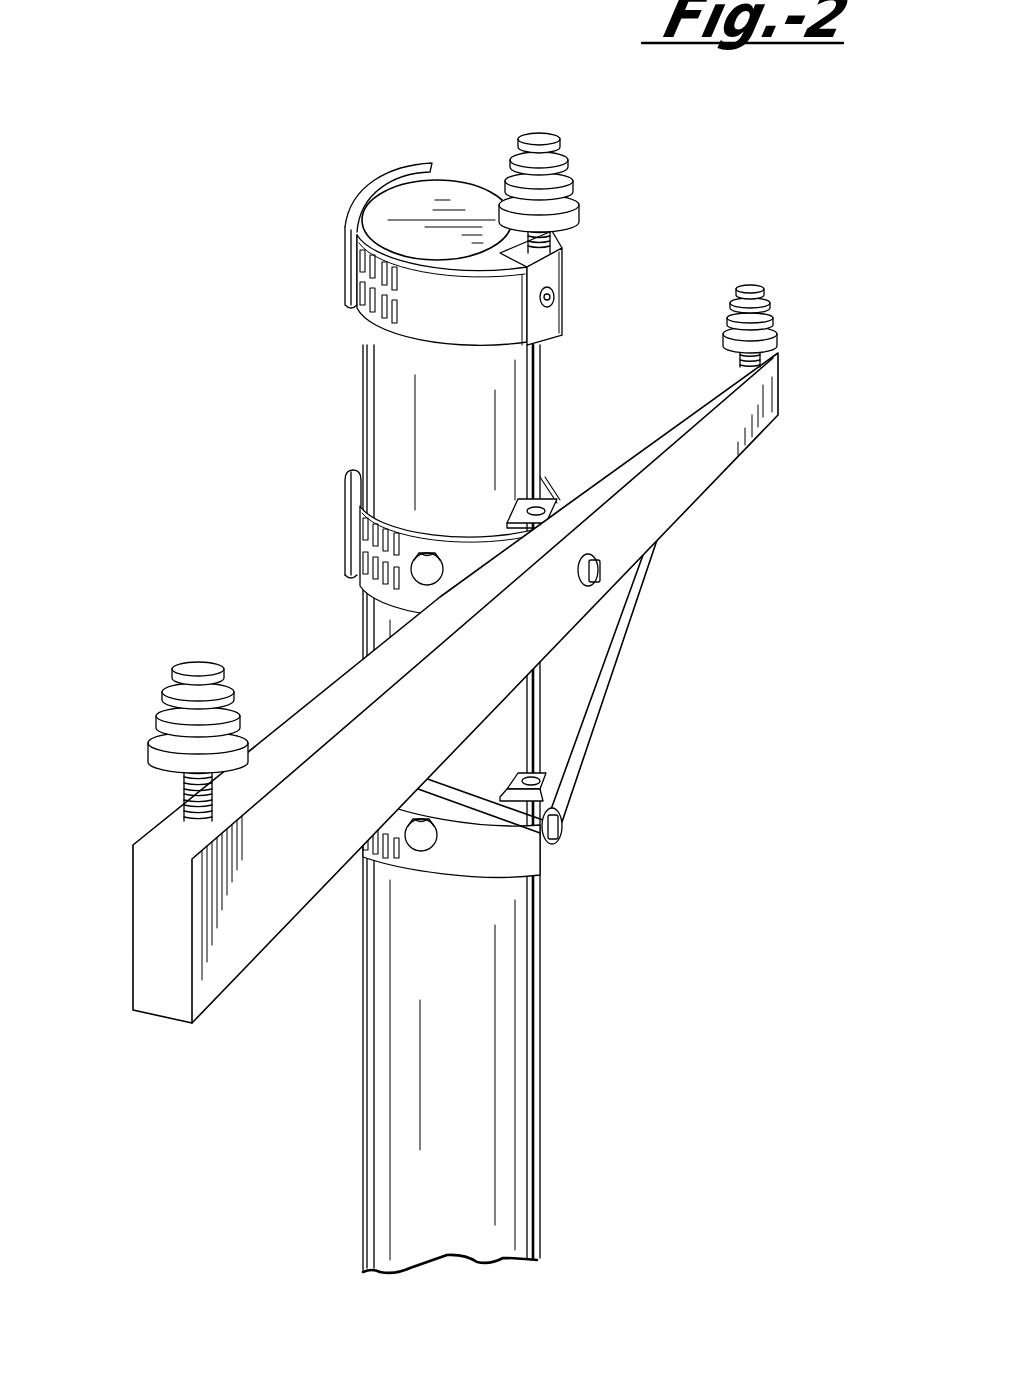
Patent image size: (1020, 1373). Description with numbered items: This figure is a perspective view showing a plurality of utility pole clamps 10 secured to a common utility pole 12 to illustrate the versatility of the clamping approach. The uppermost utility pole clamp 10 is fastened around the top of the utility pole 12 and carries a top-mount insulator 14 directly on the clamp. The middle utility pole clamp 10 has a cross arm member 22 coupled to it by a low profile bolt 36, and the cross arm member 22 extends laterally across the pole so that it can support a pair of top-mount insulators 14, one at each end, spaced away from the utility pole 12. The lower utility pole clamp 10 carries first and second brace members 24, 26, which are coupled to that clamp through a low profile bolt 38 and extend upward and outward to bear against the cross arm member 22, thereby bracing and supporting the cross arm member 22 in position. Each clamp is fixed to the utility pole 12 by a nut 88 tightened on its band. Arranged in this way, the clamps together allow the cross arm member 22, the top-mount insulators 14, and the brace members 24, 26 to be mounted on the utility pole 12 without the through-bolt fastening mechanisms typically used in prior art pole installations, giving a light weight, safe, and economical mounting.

The utility pole clamp 10 is at (331, 250).
The utility pole 12 is at (540, 390).
The top-mount insulator 14 is at (565, 172).
The cross arm member 22 is at (740, 457).
The first brace member 24 is at (607, 703).
The second brace member 26 is at (490, 812).
The low profile bolt 36 is at (600, 580).
The low profile bolt 38 is at (568, 836).
The nut 88 is at (427, 553).